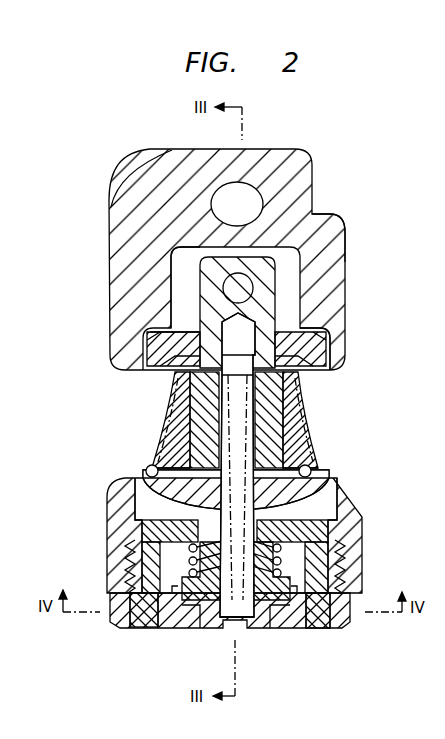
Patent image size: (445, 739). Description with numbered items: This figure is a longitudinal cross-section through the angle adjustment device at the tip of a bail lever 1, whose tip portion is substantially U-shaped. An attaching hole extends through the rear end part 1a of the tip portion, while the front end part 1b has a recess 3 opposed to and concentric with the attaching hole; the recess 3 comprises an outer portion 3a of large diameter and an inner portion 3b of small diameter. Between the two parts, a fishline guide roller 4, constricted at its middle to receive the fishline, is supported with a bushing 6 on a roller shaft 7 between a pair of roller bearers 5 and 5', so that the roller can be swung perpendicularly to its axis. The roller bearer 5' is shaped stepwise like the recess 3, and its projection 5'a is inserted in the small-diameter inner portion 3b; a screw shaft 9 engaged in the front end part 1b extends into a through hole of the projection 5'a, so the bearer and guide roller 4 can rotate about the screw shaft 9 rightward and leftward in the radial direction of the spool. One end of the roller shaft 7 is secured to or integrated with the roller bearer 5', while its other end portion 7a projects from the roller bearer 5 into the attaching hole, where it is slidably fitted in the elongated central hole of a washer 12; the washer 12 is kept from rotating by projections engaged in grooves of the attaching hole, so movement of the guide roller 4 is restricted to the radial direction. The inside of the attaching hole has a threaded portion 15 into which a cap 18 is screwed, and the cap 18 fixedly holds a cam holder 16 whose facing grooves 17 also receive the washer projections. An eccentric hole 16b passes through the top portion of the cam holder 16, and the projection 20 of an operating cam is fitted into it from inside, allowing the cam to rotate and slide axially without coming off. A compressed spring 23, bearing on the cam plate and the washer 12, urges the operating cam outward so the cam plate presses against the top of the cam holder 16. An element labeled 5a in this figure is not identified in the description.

The bail lever 1 is at (330, 187).
The rear end part 1a is at (346, 504).
The front end part 1b is at (341, 232).
The recess 3 is at (288, 302).
The outer portion 3a is at (326, 334).
The inner portion 3b is at (176, 250).
The fishline guide roller 4 is at (285, 396).
The roller bearer 5 is at (206, 487).
The ball seat 5a is at (134, 508).
The roller bearer 5' is at (203, 349).
The projection 5'a is at (134, 305).
The bushing 6 is at (298, 430).
The roller shaft 7 is at (233, 390).
The other end portion 7a is at (232, 610).
The screw shaft 9 is at (254, 280).
The washer 12 is at (150, 531).
The threaded portion 15 is at (137, 557).
The cam holder 16 is at (173, 636).
The eccentric hole 16b is at (274, 628).
The grooves 17 is at (330, 531).
The cap 18 is at (134, 640).
The projection 20 is at (260, 630).
The compressed spring 23 is at (341, 560).